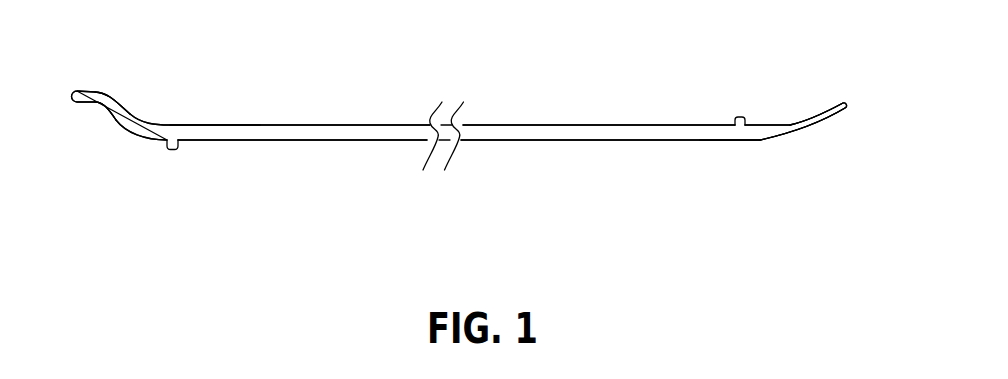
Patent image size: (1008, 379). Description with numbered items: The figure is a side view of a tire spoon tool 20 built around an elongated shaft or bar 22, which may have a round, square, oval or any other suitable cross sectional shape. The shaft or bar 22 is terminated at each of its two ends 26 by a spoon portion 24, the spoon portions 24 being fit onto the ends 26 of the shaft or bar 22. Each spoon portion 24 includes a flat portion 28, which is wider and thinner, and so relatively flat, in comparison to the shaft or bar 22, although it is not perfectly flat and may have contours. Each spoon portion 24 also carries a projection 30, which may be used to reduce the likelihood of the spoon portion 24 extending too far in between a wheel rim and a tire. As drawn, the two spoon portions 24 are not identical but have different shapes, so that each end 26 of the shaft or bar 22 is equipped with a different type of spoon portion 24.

The tire spoon tool 20 is at (535, 44).
The shaft or bar 22 is at (525, 132).
The spoon portion 24 is at (140, 89).
The end 26 is at (233, 106).
The flat portion 28 is at (118, 124).
The projection 30 is at (176, 149).